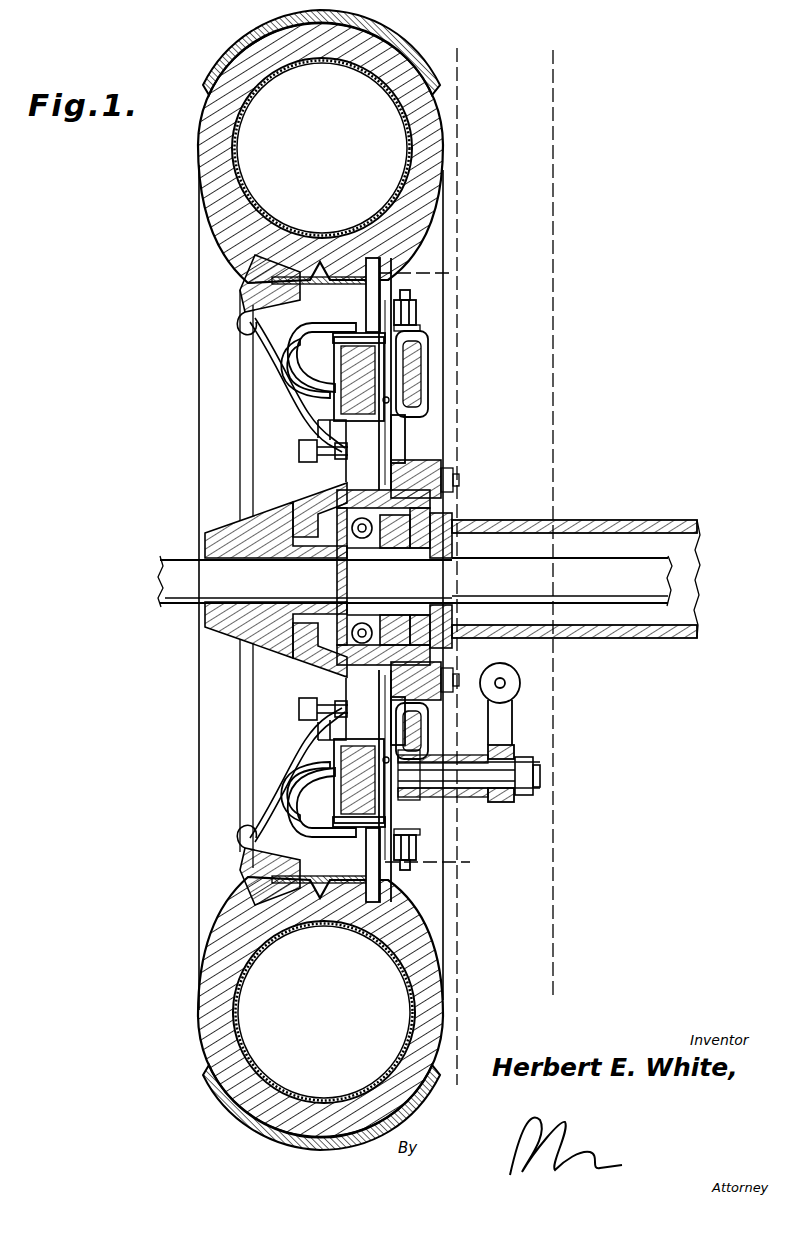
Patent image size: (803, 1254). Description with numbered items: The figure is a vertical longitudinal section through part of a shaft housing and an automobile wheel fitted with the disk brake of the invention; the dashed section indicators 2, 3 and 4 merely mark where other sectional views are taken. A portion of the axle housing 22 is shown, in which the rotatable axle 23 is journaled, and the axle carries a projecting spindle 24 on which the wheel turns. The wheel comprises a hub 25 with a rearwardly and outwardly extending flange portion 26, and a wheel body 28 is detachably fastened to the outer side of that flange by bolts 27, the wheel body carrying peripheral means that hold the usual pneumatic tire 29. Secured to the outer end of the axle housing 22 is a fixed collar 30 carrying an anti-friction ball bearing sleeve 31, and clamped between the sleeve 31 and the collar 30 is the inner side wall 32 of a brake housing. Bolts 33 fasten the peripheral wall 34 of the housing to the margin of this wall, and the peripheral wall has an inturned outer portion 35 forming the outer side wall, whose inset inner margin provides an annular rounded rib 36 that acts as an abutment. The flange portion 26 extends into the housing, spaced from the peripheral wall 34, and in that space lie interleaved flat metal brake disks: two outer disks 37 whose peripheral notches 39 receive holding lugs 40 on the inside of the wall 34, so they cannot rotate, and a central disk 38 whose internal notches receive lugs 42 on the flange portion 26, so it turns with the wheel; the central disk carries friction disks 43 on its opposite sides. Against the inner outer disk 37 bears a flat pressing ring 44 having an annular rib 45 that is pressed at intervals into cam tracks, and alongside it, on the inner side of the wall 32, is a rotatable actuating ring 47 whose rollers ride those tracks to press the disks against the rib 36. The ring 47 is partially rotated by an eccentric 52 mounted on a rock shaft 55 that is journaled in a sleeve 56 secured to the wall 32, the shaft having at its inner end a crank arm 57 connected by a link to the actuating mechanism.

The section line 2- 2 is at (600, 48).
The section line 3- 3 is at (495, 48).
The section line 4- 4 is at (450, 273).
The axle housing 22 is at (625, 520).
The rotatable axle 23 is at (528, 560).
The projecting spindle 24 is at (168, 565).
The hub 25 is at (205, 530).
The flange portion 26 is at (322, 430).
The bolts 27 is at (300, 452).
The wheel body 28 is at (298, 403).
The pneumatic tire 29 is at (215, 170).
The fixed collar 30 is at (418, 470).
The anti-friction ball bearing sleeve 31 is at (345, 488).
The inner side wall 32 is at (392, 428).
The bolts 33 is at (418, 314).
The peripheral wall 34 is at (350, 333).
The inturned outer portion 35 is at (305, 345).
The annular rounded rib 36 is at (300, 360).
The outer disks 37 is at (344, 360).
The central disk 38 is at (388, 300).
The notches 39 is at (348, 607).
The holding lugs 40 is at (330, 338).
The lugs 42 is at (405, 426).
The friction disks 43 is at (412, 396).
The pressing ring 44 is at (425, 336).
The annular rib 45 is at (430, 372).
The actuating ring 47 is at (428, 346).
The eccentric 52 is at (445, 800).
The rock shaft 55 is at (485, 790).
The sleeve 56 is at (458, 758).
The crank arm 57 is at (508, 712).